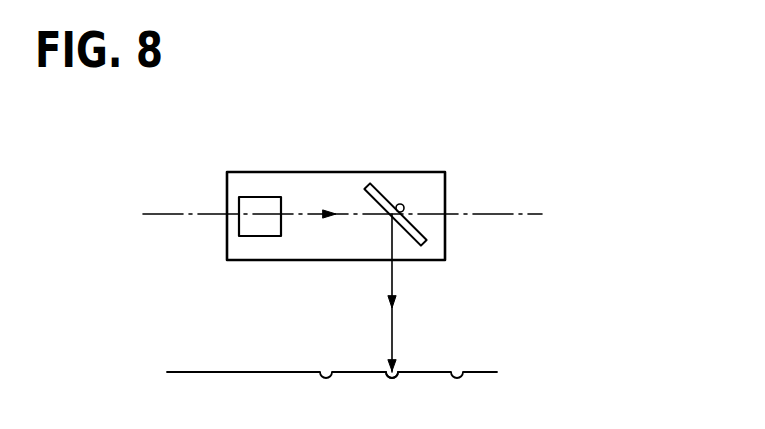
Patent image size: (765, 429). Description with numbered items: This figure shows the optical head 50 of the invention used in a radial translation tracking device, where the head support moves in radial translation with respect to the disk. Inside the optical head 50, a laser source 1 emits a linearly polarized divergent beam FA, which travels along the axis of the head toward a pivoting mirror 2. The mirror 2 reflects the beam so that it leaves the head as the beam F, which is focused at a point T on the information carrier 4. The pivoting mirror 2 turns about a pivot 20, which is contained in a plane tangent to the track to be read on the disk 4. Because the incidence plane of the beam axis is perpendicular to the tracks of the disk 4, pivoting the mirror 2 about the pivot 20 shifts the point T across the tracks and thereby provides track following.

The laser source 1 is at (252, 199).
The divergent beam FA is at (300, 203).
The pivoting mirror 2 is at (369, 187).
The pivot 20 is at (400, 203).
The optical head 50 is at (508, 193).
The beam F is at (394, 331).
The information carrier 4 is at (478, 371).
The point T is at (396, 377).